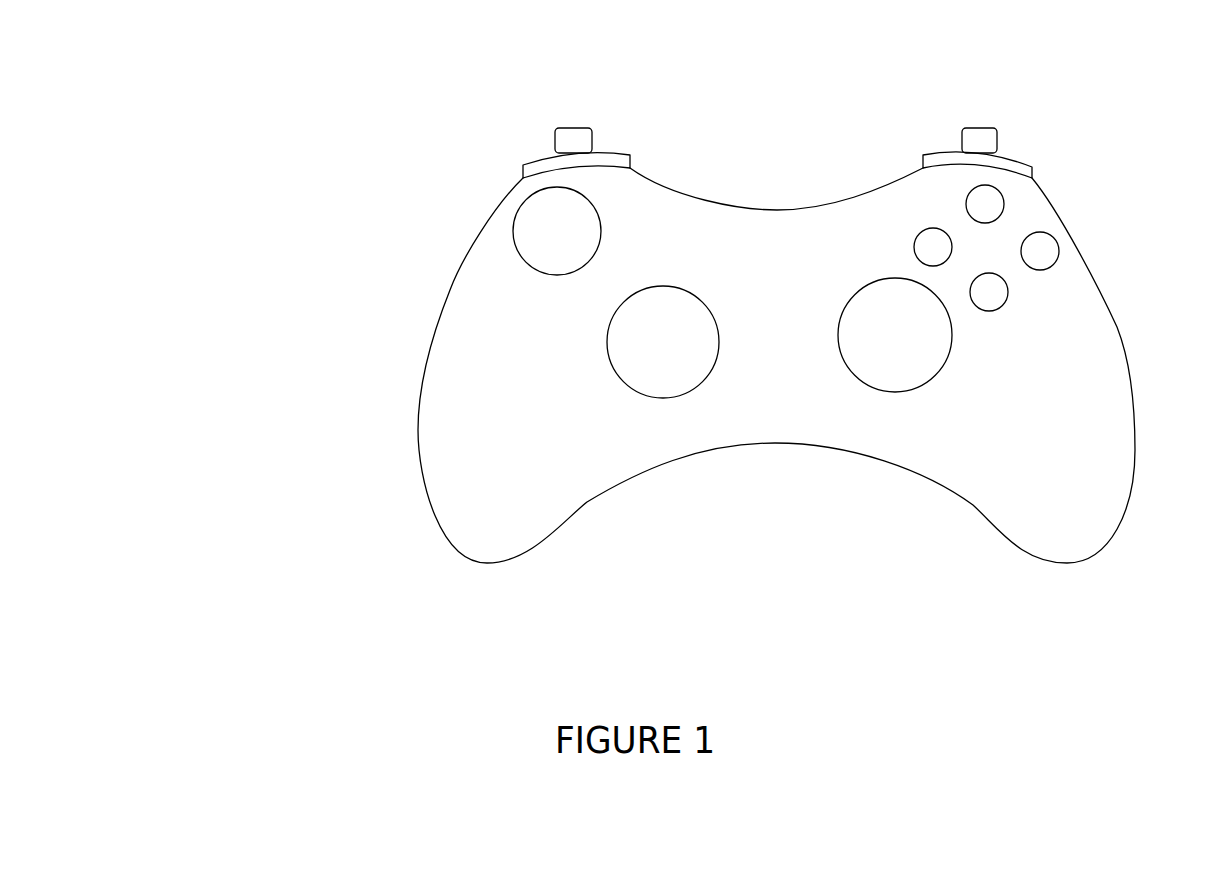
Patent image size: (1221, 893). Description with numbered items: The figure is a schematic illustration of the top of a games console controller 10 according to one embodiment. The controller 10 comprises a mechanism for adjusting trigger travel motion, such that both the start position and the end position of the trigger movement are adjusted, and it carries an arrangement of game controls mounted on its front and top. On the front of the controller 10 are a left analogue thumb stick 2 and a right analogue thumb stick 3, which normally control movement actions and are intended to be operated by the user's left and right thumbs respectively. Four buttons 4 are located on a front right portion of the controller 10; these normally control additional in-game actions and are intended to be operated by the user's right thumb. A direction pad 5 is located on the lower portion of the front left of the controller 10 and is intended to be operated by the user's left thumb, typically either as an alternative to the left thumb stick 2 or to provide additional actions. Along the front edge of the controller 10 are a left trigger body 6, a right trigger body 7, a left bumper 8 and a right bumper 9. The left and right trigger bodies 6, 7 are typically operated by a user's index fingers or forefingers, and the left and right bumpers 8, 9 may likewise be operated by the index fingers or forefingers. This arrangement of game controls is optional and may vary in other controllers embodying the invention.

The left analogue thumb stick 2 is at (513, 235).
The right analogue thumb stick 3 is at (880, 388).
The buttons 4 is at (985, 250).
The direction pad 5 is at (676, 392).
The left trigger body 6 is at (572, 130).
The right trigger body 7 is at (980, 130).
The left bumper 8 is at (523, 168).
The right bumper 9 is at (932, 155).
The controller 10 is at (372, 351).